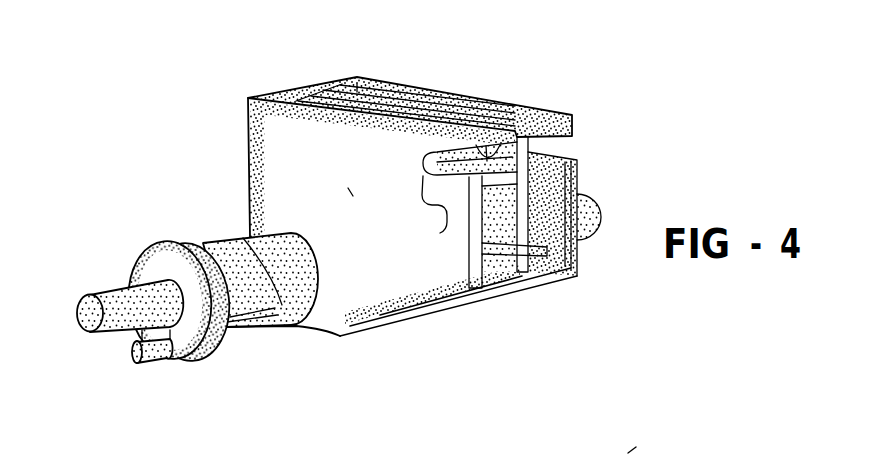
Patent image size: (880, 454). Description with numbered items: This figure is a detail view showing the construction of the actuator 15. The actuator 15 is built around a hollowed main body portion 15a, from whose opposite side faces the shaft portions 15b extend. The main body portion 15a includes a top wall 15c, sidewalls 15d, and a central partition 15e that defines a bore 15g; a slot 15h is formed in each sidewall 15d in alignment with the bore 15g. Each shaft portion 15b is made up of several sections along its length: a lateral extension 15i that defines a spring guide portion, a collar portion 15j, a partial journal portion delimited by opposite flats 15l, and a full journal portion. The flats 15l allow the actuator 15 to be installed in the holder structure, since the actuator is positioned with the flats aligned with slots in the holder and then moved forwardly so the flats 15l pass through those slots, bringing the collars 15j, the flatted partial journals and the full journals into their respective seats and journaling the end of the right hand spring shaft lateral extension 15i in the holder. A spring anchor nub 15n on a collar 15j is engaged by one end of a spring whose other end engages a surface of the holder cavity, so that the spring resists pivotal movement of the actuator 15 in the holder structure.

The actuator 15 is at (645, 444).
The main body portion 15a is at (402, 99).
The shaft portion 15b is at (212, 242).
The top wall 15c is at (308, 92).
The sidewall 15d is at (383, 217).
The central partition 15e is at (540, 267).
The bore 15g is at (510, 157).
The slot 15h is at (447, 224).
The lateral extension 15i is at (120, 297).
The collar portion 15j is at (140, 248).
The flat 15l is at (242, 313).
The spring anchor nub 15n is at (163, 367).